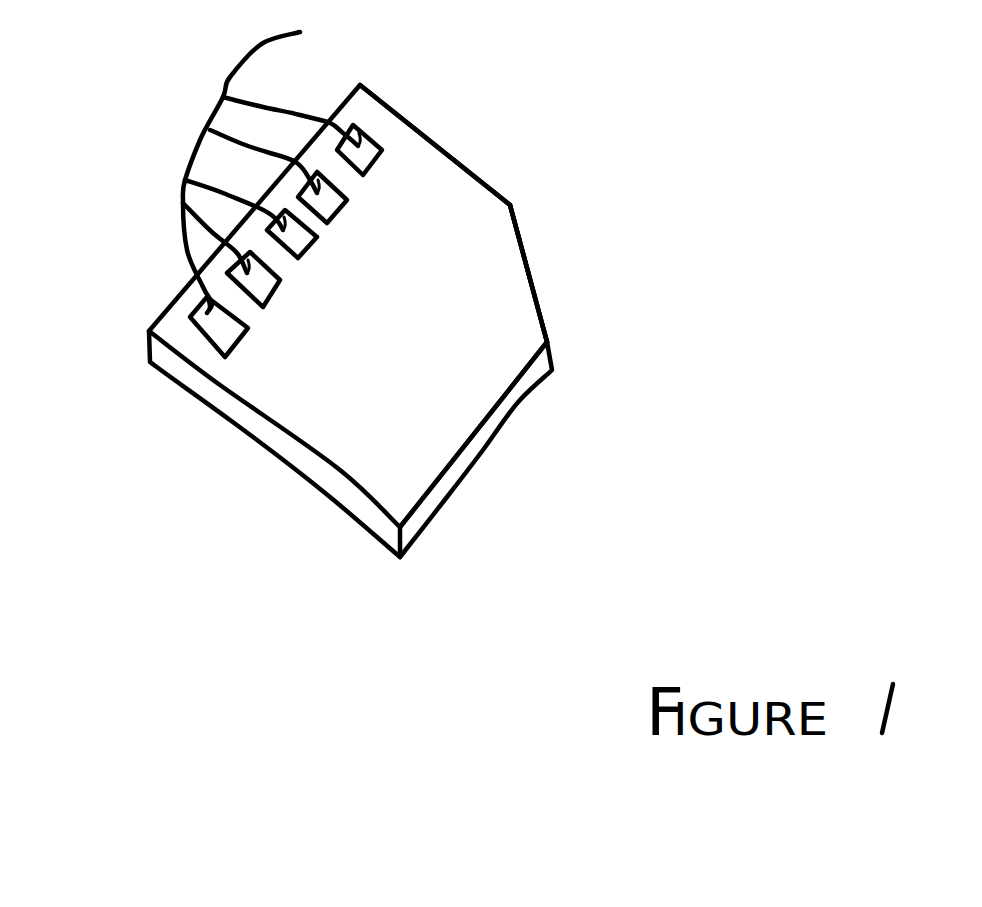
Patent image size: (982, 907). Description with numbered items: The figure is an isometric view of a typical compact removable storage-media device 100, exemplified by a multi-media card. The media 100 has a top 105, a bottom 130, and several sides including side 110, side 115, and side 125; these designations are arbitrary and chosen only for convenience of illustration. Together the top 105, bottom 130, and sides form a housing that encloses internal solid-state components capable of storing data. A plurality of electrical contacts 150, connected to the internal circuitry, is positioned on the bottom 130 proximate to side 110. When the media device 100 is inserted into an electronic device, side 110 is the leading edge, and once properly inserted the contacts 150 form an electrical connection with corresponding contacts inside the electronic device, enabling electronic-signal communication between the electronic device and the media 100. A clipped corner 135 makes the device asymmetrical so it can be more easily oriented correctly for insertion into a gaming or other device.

The compact removable storage-media device 100 is at (442, 305).
The top 105 is at (263, 470).
The side 110 is at (152, 310).
The side 115 is at (510, 398).
The side 125 is at (409, 110).
The bottom 130 is at (435, 207).
The clipped corner 135 is at (568, 270).
The electrical contacts 150 is at (323, 12).